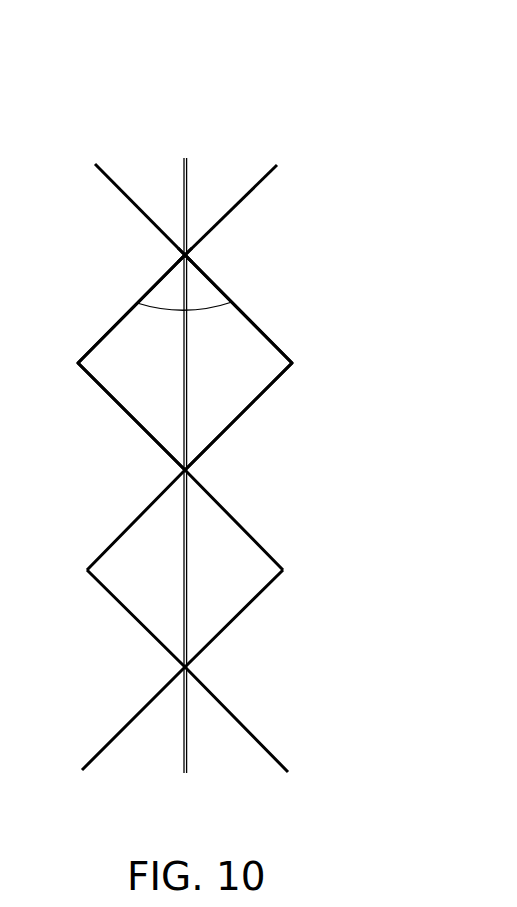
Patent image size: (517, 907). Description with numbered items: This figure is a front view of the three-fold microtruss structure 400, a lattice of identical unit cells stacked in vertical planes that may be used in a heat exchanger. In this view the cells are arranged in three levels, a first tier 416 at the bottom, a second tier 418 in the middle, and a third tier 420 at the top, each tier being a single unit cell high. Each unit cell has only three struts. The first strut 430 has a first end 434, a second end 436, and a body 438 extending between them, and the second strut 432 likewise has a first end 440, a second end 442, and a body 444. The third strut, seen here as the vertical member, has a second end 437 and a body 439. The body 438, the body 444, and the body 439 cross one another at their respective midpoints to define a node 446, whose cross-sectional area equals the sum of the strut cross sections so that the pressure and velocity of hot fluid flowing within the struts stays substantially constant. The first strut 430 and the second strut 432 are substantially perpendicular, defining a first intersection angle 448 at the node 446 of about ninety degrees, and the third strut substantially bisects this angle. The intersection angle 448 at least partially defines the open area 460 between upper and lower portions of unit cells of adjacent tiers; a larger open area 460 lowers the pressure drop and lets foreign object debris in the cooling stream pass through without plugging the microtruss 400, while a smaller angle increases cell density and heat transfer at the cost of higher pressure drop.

The microtruss structure 400 is at (300, 138).
The first tier 416 is at (244, 658).
The second tier 418 is at (244, 468).
The third tier 420 is at (251, 262).
The first strut 430 is at (117, 182).
The second strut 432 is at (254, 187).
The first end 434 is at (103, 179).
The second end 436 is at (293, 356).
The second end 437 is at (187, 353).
The body 438 is at (232, 299).
The body 439 is at (182, 322).
The first end 440 is at (278, 166).
The second end 442 is at (78, 362).
The body 444 is at (92, 342).
The node 446 is at (188, 256).
The first intersection angle 448 is at (137, 305).
The open area 460 is at (245, 374).